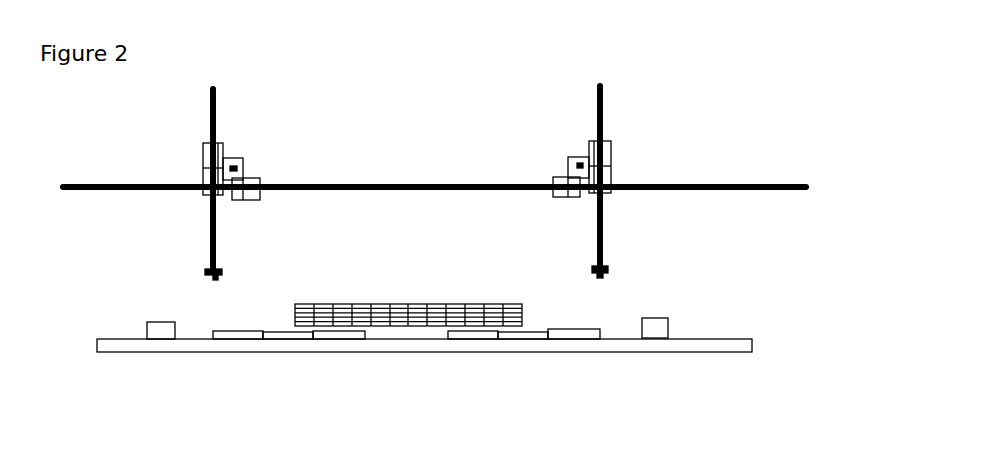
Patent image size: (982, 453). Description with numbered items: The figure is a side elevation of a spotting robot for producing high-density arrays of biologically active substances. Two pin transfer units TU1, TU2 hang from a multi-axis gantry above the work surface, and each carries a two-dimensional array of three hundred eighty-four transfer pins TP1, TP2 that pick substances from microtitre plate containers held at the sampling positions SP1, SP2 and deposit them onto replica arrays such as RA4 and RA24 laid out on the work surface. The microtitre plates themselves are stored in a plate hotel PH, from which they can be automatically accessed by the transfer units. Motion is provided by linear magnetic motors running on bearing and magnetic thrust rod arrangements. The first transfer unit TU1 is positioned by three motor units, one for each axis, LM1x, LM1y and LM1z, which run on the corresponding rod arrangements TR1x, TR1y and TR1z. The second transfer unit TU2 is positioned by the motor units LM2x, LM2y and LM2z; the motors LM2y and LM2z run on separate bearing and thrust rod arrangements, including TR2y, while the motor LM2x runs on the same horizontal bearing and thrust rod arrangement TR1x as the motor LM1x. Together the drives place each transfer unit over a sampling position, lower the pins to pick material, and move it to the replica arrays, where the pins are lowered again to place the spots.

The bearing and magnetic thrust rod arrangement TR1z is at (407, 159).
The bearing and magnetic thrust rod arrangement TR1x is at (478, 186).
The bearing and magnetic thrust rod arrangement TR1y is at (238, 168).
The bearing and thrust rod arrangement TR2y is at (577, 165).
The linear magnetic motor unit LM1x is at (245, 202).
The linear magnetic motor unit LM1y is at (242, 160).
The linear magnetic motor unit LM1z is at (203, 168).
The linear motor unit LM2x is at (562, 198).
The linear magnetic motor unit LM2y is at (570, 157).
The linear magnetic motor unit LM2z is at (612, 166).
The first transfer unit TU1 is at (239, 259).
The second transfer unit TU2 is at (572, 257).
The transfer pins TP1 is at (209, 281).
The transfer pins TP2 is at (603, 278).
The sampling position SP1 is at (160, 329).
The sampling position SP2 is at (655, 326).
The replica array RA4 is at (239, 334).
The replica array RA24 is at (578, 335).
The plate hotel PH is at (404, 312).